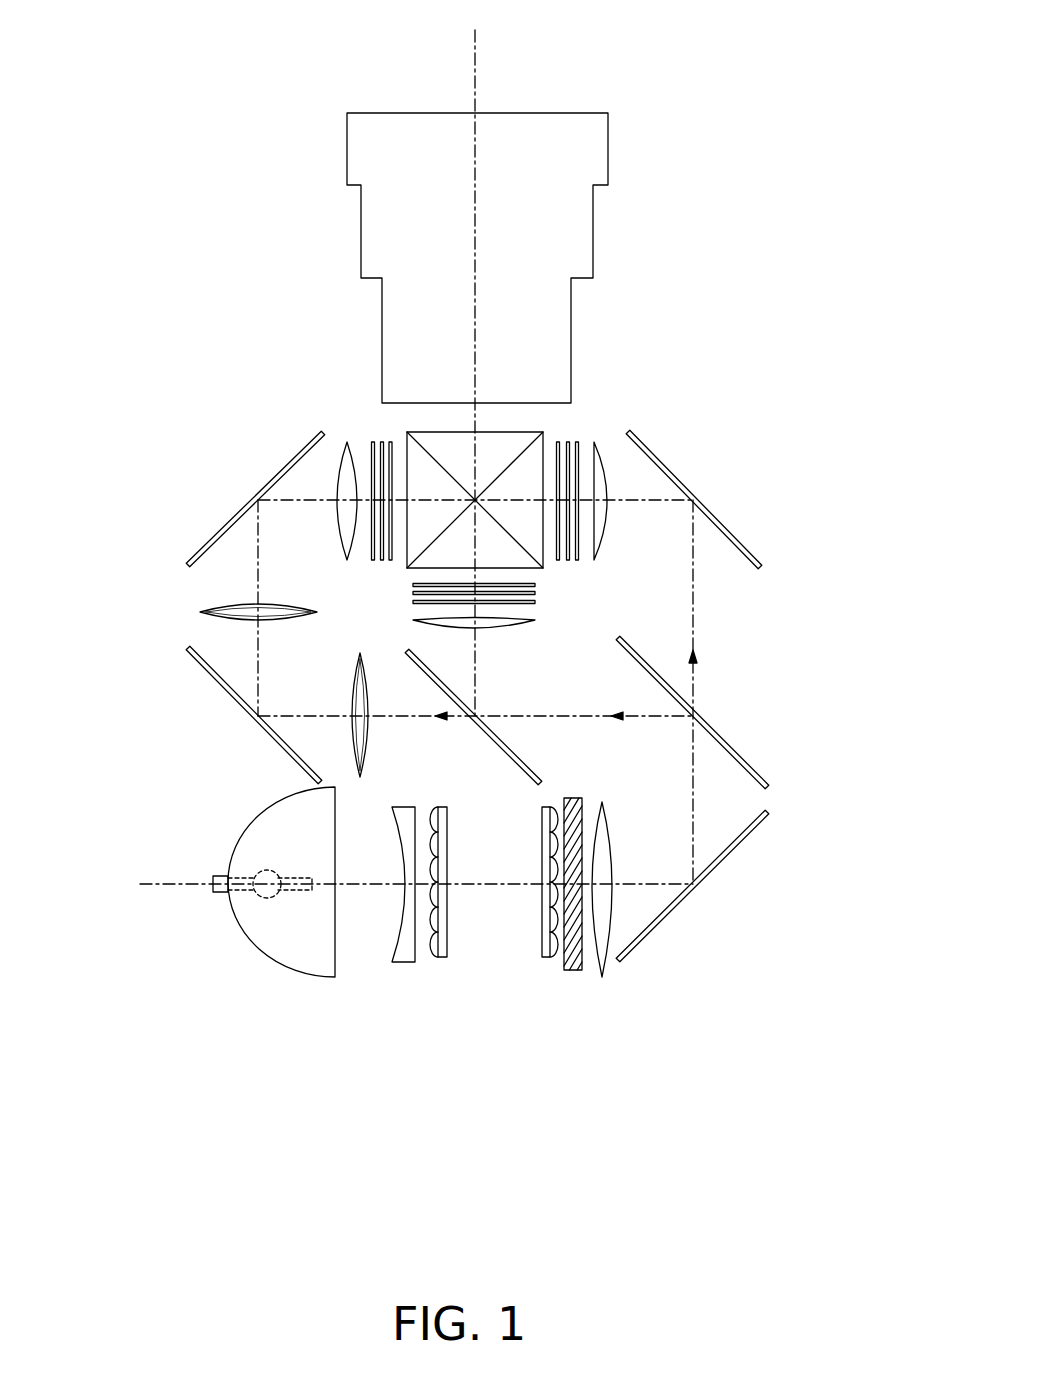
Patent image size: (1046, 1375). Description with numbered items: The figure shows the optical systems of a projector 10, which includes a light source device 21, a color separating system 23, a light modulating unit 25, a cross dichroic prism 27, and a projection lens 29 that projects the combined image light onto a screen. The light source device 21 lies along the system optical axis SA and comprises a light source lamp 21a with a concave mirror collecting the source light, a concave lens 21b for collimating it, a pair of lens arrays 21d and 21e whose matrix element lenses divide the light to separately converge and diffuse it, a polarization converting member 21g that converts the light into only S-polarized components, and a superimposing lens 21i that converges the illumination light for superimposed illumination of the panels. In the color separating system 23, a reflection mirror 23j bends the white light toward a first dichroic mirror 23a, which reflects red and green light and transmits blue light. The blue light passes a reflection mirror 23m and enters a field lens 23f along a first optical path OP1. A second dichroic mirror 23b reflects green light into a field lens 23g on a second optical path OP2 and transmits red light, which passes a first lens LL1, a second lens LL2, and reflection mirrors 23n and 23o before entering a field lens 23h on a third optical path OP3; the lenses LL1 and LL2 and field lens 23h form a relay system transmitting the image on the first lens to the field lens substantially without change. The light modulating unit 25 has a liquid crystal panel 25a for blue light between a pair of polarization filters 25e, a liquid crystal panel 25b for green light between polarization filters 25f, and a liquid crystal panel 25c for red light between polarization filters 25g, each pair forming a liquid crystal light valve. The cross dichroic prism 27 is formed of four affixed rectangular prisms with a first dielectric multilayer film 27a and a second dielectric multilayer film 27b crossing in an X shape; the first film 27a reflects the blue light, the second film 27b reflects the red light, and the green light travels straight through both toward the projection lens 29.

The projector 10 is at (808, 27).
The projection lens 29 is at (563, 210).
The cross dichroic prism 27 is at (440, 418).
The first dielectric multilayer film 27a is at (425, 440).
The second dielectric multilayer film 27b is at (525, 440).
The light modulating unit 25 is at (590, 431).
The liquid crystal panel for blue light 25a is at (570, 530).
The liquid crystal panel for green light 25b is at (535, 593).
The liquid crystal panel for red light 25c is at (375, 487).
The polarization filters for blue light 25e is at (558, 560).
The polarization filters for green light 25f is at (413, 585).
The polarization filters for red light 25g is at (390, 560).
The color separating system 23 is at (230, 740).
The first dichroic mirror 23a is at (735, 750).
The second dichroic mirror 23b is at (515, 752).
The field lens 23f is at (608, 487).
The field lens 23g is at (540, 623).
The field lens 23h is at (337, 527).
The reflection mirror 23j is at (668, 918).
The reflection mirror 23m is at (755, 548).
The reflection mirror 23n is at (218, 683).
The reflection mirror 23o is at (205, 538).
The first lens LL1 is at (365, 740).
The second lens LL2 is at (200, 612).
The first optical path OP1 is at (693, 602).
The second optical path OP2 is at (475, 668).
The third optical path OP3 is at (258, 585).
The system optical axis SA is at (490, 884).
The light source device 21 is at (460, 1066).
The light source lamp 21a is at (285, 965).
The concave lens 21b is at (396, 955).
The lens array 21d is at (445, 955).
The lens array 21e is at (545, 957).
The polarization converting member 21g is at (573, 972).
The superimposing lens 21i is at (605, 975).